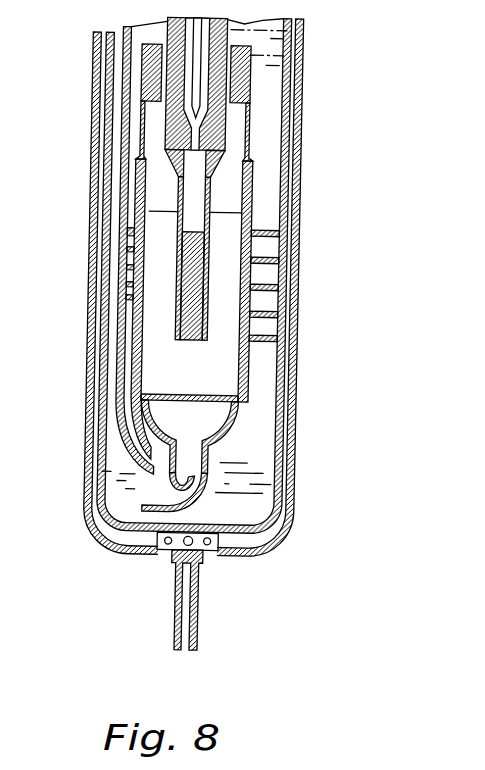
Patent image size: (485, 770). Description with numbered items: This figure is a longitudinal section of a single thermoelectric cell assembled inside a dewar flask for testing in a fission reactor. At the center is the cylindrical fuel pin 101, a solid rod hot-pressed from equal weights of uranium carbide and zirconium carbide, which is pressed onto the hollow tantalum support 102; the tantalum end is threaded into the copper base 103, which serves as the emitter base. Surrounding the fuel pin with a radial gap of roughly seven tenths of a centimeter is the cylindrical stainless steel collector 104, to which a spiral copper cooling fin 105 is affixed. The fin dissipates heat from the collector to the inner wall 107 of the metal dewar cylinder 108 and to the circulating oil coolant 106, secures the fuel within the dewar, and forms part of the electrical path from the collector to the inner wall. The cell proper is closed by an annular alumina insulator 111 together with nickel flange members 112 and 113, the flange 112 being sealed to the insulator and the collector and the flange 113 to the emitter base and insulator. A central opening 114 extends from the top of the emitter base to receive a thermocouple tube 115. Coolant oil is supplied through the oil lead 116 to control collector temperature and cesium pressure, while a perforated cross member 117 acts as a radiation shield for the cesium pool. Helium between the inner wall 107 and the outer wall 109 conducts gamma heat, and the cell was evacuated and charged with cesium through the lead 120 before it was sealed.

The cylindrical fuel pin 101 is at (205, 283).
The hollow tantalum support 102 is at (207, 202).
The copper base 103 is at (250, 158).
The cylindrical stainless steel collector 104 is at (248, 380).
The spiral copper cooling fin 105 is at (270, 332).
The circulating oil coolant 106 is at (252, 462).
The inner wall of dewar cylinder 107 is at (272, 311).
The metal dewar cylinder 108 is at (362, 273).
The outer wall of dewar flask 109 is at (293, 233).
The annular alumina insulator 111 is at (204, 78).
The nickel flange member 112 is at (224, 140).
The nickel flange member 113 is at (285, 28).
The central opening 114 is at (244, 76).
The thermocouple tube 115 is at (196, 114).
The oil lead 116 is at (120, 448).
The perforated cross member 117 is at (207, 403).
The lead 120 is at (158, 513).